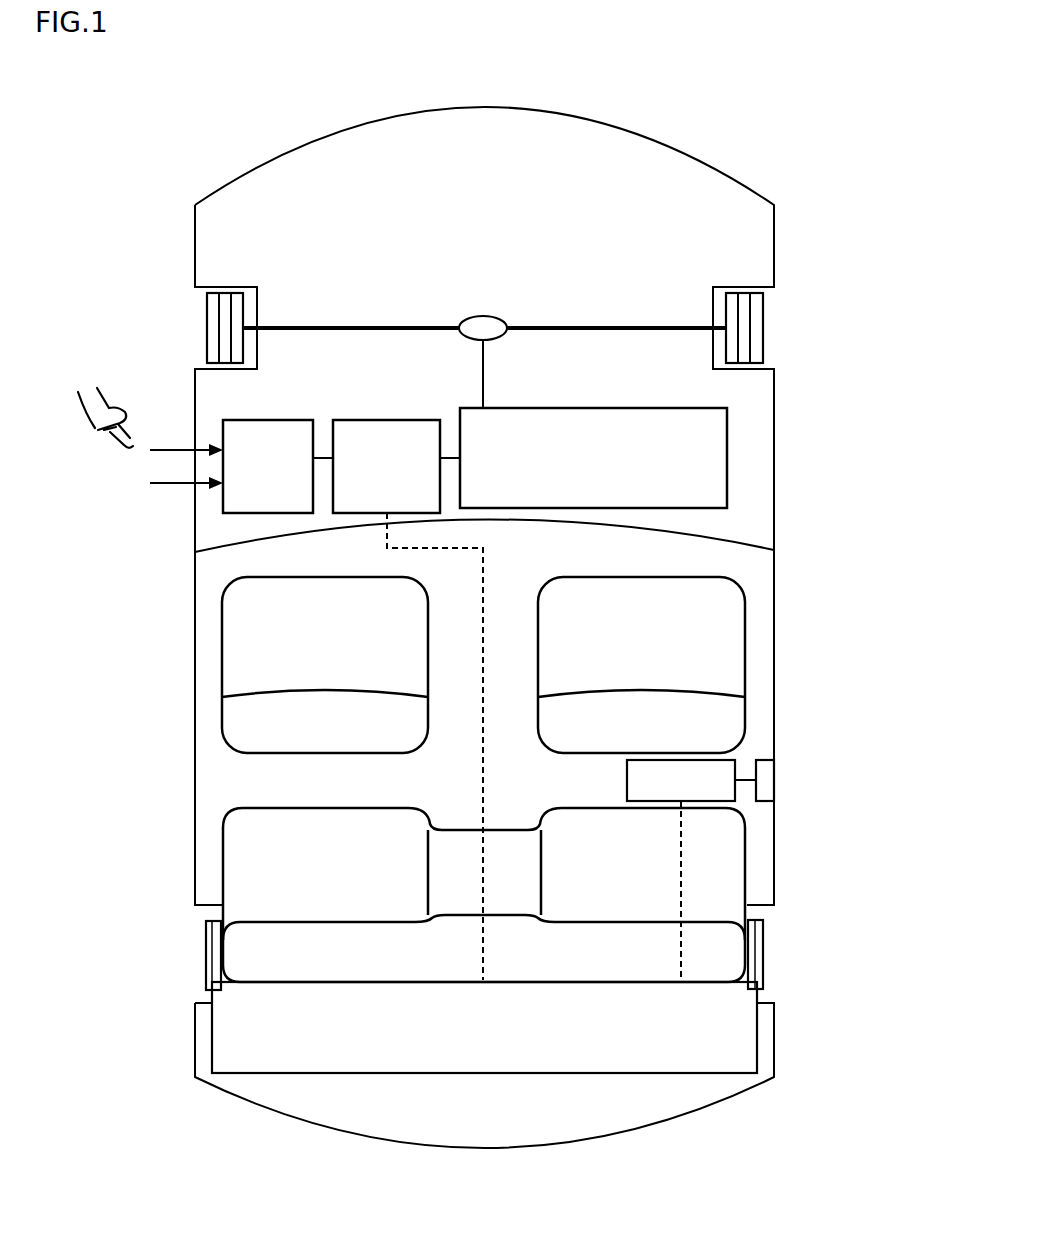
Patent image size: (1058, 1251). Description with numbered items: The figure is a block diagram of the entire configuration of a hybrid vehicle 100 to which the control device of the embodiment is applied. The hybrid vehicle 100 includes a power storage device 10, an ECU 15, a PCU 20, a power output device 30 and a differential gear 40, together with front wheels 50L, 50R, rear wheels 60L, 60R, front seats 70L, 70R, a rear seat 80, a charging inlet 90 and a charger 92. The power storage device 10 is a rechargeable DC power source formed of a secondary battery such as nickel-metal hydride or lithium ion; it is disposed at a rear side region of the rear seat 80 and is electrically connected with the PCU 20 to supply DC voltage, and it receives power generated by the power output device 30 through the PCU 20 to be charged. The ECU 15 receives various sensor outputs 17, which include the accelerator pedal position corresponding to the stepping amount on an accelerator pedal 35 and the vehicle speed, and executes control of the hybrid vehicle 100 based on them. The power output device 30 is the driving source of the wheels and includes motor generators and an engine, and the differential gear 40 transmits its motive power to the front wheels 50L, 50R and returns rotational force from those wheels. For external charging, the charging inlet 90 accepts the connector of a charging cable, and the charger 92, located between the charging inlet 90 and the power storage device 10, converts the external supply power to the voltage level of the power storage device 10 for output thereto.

The hybrid vehicle 100 is at (503, 71).
The power storage device 10 is at (483, 1060).
The ECU 15 is at (285, 430).
The various sensor outputs 17 is at (176, 438).
The PCU 20 is at (357, 430).
The power output device 30 is at (685, 420).
The accelerator pedal 35 is at (132, 438).
The differential gear 40 is at (482, 316).
The front wheel 50L is at (207, 328).
The front wheel 50R is at (763, 328).
The rear wheel 60L is at (212, 954).
The rear wheel 60R is at (763, 953).
The front seat 70L is at (325, 590).
The front seat 70R is at (643, 590).
The rear seat 80 is at (325, 818).
The charging inlet 90 is at (765, 780).
The charger 92 is at (735, 765).